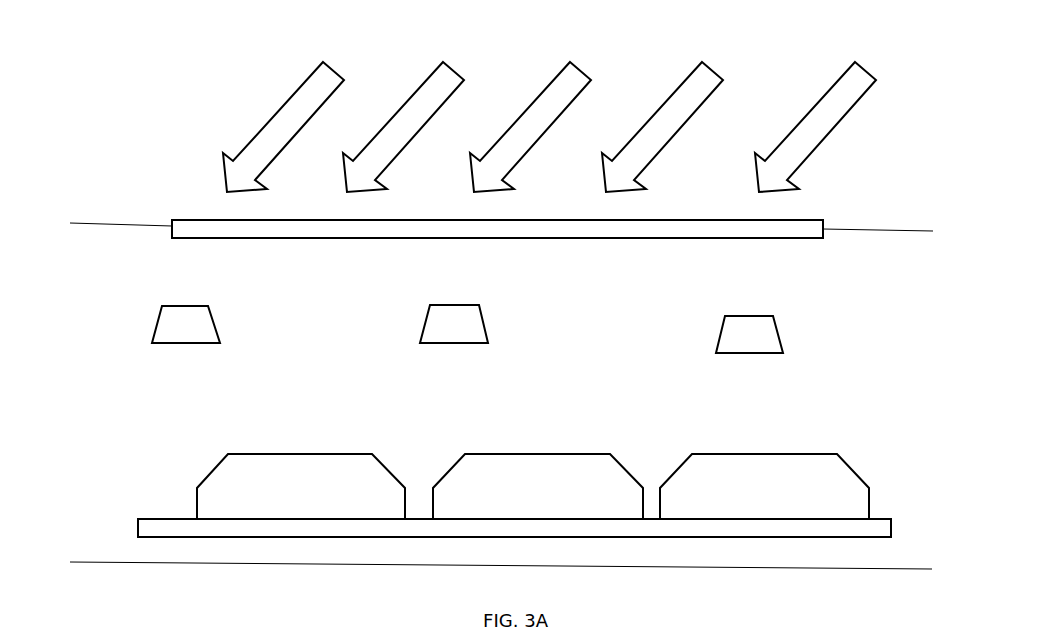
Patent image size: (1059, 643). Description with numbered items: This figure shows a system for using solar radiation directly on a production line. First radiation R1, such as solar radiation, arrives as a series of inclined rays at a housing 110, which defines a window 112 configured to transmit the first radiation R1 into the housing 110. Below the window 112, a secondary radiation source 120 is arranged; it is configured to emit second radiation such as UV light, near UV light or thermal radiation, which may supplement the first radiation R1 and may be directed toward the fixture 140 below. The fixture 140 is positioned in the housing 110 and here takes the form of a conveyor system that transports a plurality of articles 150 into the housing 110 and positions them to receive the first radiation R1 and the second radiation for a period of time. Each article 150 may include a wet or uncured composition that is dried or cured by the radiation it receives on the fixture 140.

The first radiation R1 is at (425, 75).
The housing 110 is at (158, 227).
The window 112 is at (678, 237).
The secondary radiation source 120 is at (778, 324).
The fixture 140 is at (165, 518).
The article 150 is at (803, 453).